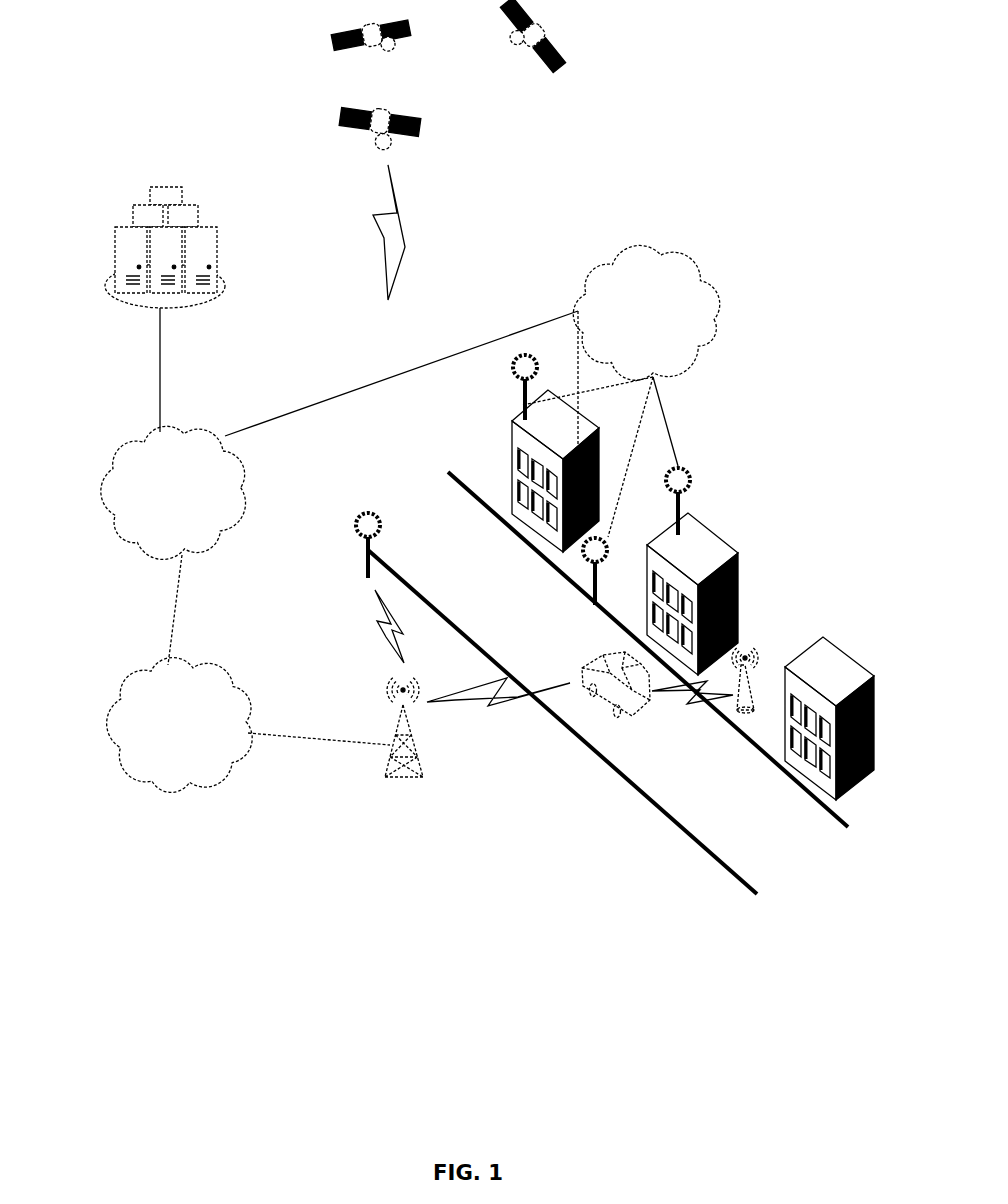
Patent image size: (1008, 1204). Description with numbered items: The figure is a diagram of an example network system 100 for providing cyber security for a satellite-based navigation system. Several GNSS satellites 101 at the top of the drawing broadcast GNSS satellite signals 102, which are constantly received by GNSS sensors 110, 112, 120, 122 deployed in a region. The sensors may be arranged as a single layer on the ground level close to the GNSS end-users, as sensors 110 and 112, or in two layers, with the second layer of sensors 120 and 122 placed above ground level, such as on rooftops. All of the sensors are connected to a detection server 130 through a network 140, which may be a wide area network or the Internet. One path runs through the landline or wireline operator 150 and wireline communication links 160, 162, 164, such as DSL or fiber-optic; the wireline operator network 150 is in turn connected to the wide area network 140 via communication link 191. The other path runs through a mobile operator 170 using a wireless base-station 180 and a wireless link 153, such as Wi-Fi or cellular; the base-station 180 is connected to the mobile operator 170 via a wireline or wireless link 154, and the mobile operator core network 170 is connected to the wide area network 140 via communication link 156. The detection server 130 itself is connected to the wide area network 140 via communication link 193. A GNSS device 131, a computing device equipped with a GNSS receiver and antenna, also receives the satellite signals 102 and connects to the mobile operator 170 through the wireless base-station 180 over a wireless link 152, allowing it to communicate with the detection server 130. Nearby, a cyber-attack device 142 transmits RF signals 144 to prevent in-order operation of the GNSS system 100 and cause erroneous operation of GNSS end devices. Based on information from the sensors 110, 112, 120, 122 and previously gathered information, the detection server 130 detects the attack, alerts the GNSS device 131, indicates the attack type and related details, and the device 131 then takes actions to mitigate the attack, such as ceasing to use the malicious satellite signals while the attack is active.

The network system 100 is at (618, 193).
The satellites 101 is at (417, 128).
The GNSS satellite signals 102 is at (402, 218).
The GNSS sensor 110 is at (372, 512).
The GNSS sensor 112 is at (583, 560).
The GNSS sensor 120 is at (512, 380).
The GNSS sensor 122 is at (695, 488).
The detection server 130 is at (208, 228).
The GNSS device 131 is at (642, 712).
The network 140 is at (123, 537).
The cyber-attack device 142 is at (748, 650).
The RF signals 144 is at (683, 700).
The wireline operator 150 is at (703, 340).
The wireless link 152 is at (527, 698).
The wireless link 153 is at (383, 640).
The link 154 is at (318, 737).
The communication link 156 is at (178, 600).
The communication link 160 is at (663, 428).
The communication link 162 is at (623, 500).
The communication link 164 is at (590, 390).
The mobile operator 170 is at (195, 782).
The wireless base-station 180 is at (420, 777).
The communication link 191 is at (368, 383).
The communication link 193 is at (160, 370).